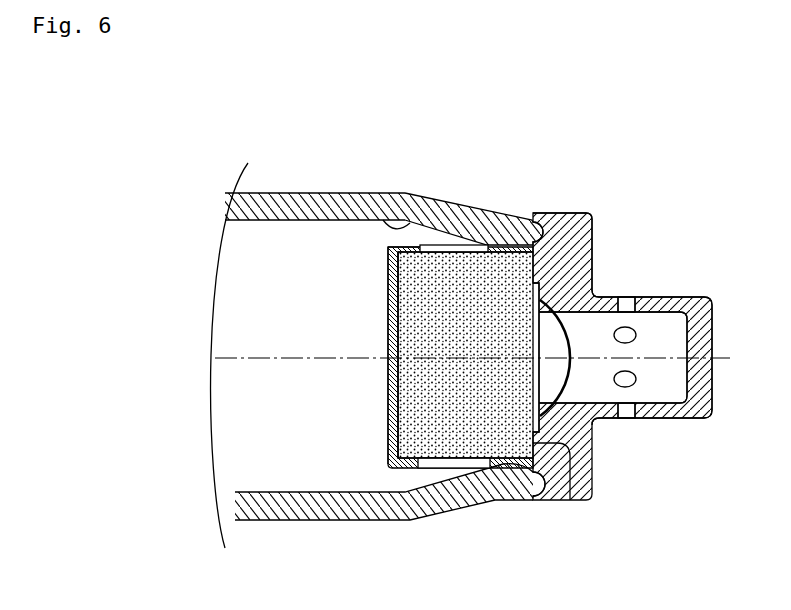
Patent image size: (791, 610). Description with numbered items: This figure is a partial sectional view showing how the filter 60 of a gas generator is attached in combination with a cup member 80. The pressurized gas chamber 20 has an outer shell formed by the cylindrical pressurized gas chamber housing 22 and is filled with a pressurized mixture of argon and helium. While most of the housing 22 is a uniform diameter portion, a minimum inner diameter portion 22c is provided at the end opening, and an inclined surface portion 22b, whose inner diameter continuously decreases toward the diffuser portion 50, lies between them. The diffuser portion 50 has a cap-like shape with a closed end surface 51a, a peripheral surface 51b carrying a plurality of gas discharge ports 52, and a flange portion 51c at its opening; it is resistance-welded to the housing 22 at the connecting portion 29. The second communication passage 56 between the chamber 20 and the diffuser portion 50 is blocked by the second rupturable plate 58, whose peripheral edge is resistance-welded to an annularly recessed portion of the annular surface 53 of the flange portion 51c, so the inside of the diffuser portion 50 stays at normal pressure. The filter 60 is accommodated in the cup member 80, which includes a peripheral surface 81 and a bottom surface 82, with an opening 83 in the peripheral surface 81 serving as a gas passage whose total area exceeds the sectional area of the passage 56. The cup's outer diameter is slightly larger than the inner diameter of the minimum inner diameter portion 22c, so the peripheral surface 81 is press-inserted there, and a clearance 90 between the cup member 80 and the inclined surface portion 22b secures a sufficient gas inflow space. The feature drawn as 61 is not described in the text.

The pressurized gas chamber 20 is at (284, 340).
The pressurized gas chamber housing 22 is at (322, 207).
The inclined surface portion 22b is at (410, 485).
The minimum inner diameter portion 22c is at (518, 224).
The connecting portion 29 is at (545, 490).
The diffuser portion 50 is at (625, 360).
The closed end surface 51a is at (665, 320).
The peripheral surface 51b is at (667, 418).
The flange portion 51c is at (565, 227).
The gas discharge ports 52 is at (620, 418).
The annular surface 53 is at (523, 455).
The second communication passage 56 is at (672, 370).
The second rupturable plate 58 is at (578, 375).
The filter 60 is at (478, 333).
The projection 61 is at (562, 468).
The cup member 80 is at (423, 355).
The peripheral surface 81 is at (414, 243).
The bottom surface 82 is at (387, 378).
The opening 83 is at (460, 246).
The clearance 90 is at (400, 232).